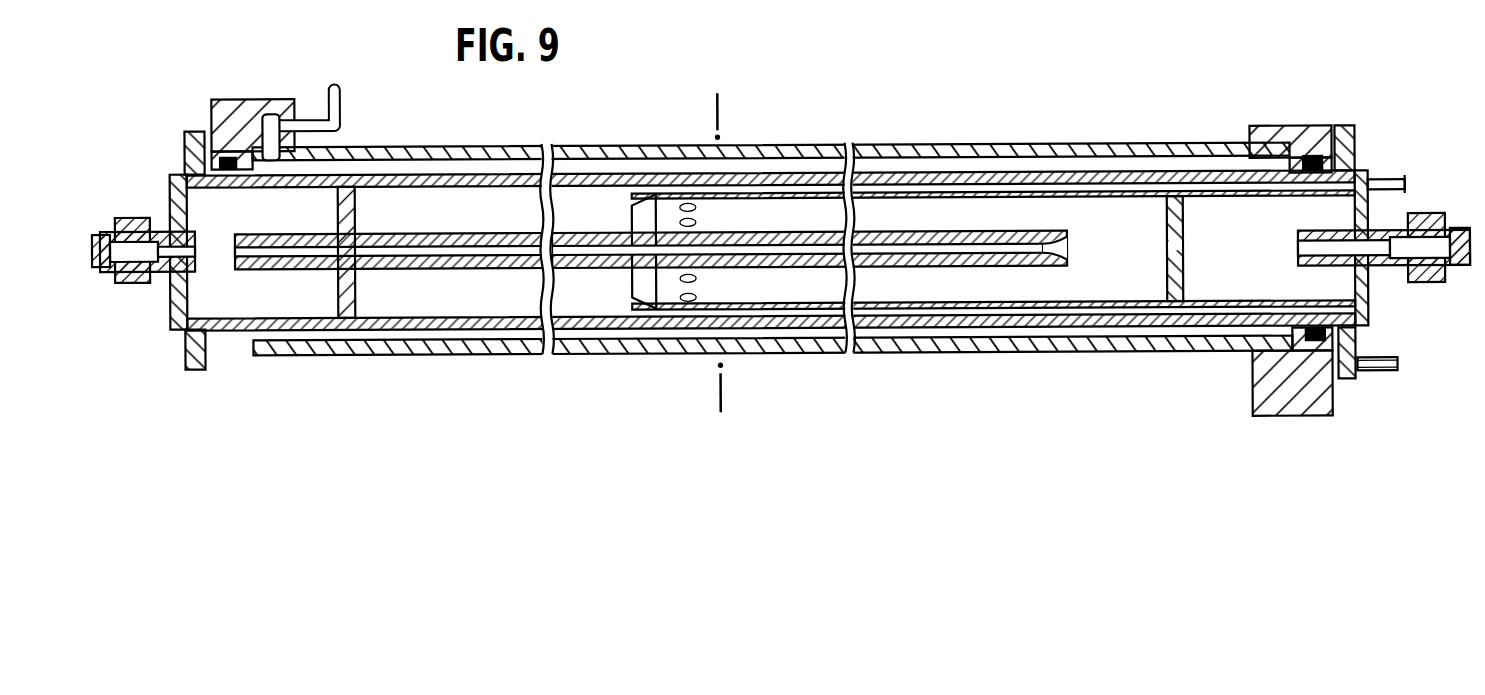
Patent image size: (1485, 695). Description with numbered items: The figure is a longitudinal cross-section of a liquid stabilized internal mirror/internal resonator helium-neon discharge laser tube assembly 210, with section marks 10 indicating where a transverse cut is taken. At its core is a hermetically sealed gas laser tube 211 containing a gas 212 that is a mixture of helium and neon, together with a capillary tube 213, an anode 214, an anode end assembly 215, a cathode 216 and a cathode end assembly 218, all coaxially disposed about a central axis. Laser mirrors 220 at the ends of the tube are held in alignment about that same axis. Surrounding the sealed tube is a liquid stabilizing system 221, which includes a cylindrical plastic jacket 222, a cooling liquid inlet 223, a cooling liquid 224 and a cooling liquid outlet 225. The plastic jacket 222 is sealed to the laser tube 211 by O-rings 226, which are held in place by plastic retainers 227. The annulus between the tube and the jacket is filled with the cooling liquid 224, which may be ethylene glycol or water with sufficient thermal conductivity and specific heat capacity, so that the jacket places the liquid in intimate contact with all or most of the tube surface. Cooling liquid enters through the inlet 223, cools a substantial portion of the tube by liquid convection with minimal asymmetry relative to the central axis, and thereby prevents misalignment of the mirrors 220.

The section line 10- 10 is at (710, 108).
The liquid stabilized internal mirror/internal resonator helium-neon discharge laser 210 is at (781, 266).
The hermetically sealed gas laser tube 211 is at (1138, 168).
The gas 212 is at (930, 249).
The capillary tube 213 is at (410, 261).
The anode 214 is at (193, 252).
The anode end assembly 215 is at (180, 177).
The cathode 216 is at (783, 305).
The cathode end assembly 218 is at (1360, 173).
The laser mirrors 220 is at (93, 262).
The liquid stabilizing system 221 is at (1243, 366).
The cylindrical plastic jacket 222 is at (972, 344).
The cooling liquid inlet 223 is at (1377, 361).
The cooling liquid 224 is at (465, 353).
The cooling liquid outlet 225 is at (343, 108).
The O-rings 226 is at (235, 338).
The plastic retainers 227 is at (198, 357).